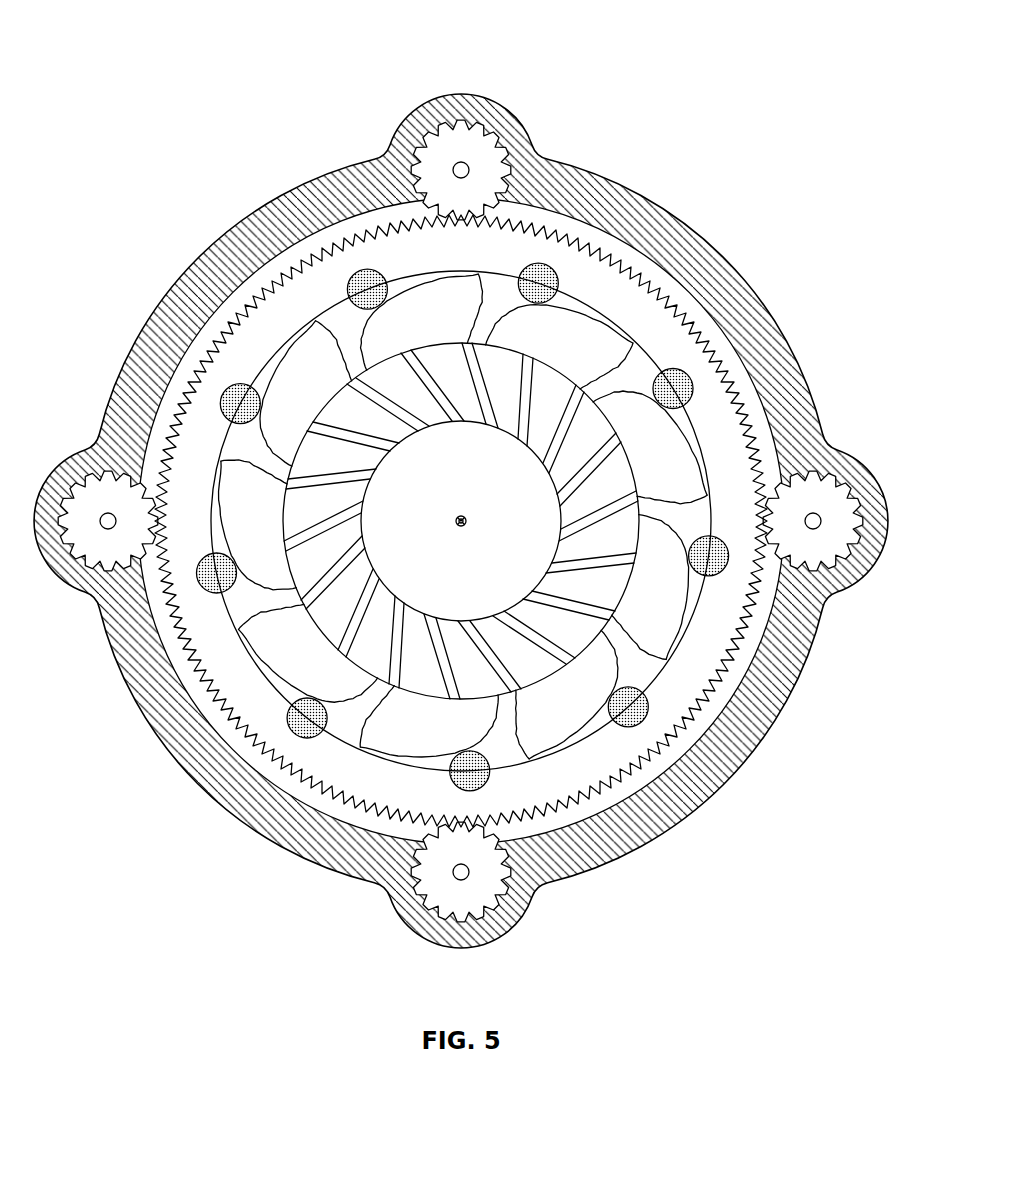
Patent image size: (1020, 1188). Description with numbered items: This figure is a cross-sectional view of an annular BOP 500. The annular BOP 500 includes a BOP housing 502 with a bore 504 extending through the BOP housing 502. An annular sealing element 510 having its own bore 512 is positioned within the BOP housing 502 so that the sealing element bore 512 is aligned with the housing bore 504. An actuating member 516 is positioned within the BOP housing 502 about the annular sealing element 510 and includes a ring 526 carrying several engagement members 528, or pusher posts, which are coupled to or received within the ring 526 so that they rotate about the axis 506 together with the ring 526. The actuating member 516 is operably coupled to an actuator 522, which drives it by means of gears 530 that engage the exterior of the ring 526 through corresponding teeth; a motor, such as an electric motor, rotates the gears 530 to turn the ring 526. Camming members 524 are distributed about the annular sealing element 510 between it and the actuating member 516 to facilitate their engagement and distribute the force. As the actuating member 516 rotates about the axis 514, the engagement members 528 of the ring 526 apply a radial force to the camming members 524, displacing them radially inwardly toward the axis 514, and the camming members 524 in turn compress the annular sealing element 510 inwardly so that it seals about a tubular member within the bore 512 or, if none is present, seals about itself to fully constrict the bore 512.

The annular BOP 500 is at (485, 522).
The BOP housing 502 is at (642, 203).
The bore 504 is at (499, 562).
The axis 506 is at (463, 530).
The annular sealing element 510 is at (323, 622).
The bore 512 is at (383, 583).
The axis 514 is at (465, 513).
The actuating member 516 is at (582, 813).
The actuator 522 is at (840, 606).
The camming members 524 is at (312, 395).
The ring 526 is at (727, 372).
The engagement members 528 is at (718, 533).
The gears 530 is at (458, 143).